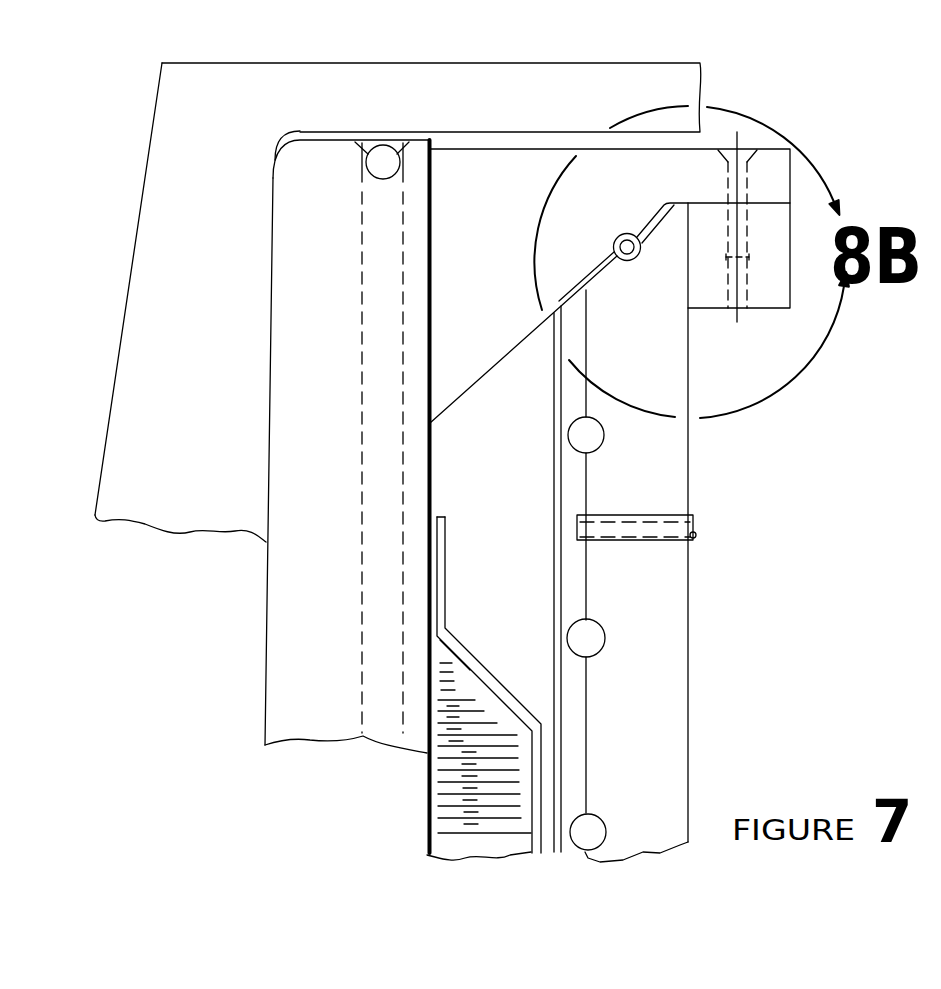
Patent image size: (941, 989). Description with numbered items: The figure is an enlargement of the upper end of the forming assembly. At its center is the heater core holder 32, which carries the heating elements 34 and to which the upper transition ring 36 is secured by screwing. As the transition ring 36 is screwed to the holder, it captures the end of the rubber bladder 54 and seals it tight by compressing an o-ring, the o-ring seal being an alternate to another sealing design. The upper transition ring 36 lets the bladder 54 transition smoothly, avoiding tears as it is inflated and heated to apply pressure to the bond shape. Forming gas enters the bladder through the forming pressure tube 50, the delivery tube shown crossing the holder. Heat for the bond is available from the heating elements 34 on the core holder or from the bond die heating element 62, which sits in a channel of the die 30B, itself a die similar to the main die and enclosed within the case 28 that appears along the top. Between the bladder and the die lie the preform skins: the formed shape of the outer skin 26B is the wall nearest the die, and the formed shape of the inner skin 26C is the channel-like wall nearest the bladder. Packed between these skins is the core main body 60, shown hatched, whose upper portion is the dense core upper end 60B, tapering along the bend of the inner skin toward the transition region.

The case 28 is at (700, 92).
The die similar to 30 30B is at (265, 573).
The bond die heating element 62 is at (376, 142).
The formed shape of outer skin from 26 26B is at (428, 780).
The formed shape of inner skin from 26 26C is at (445, 620).
The core main body 60 is at (470, 850).
The dense core upper end 60B is at (448, 673).
The rubber bladder 54 is at (554, 515).
The heating elements 34 is at (570, 452).
The upper transition block 36 is at (792, 147).
The heater core holder 32 is at (688, 603).
The forming pressure tube 50 is at (694, 524).